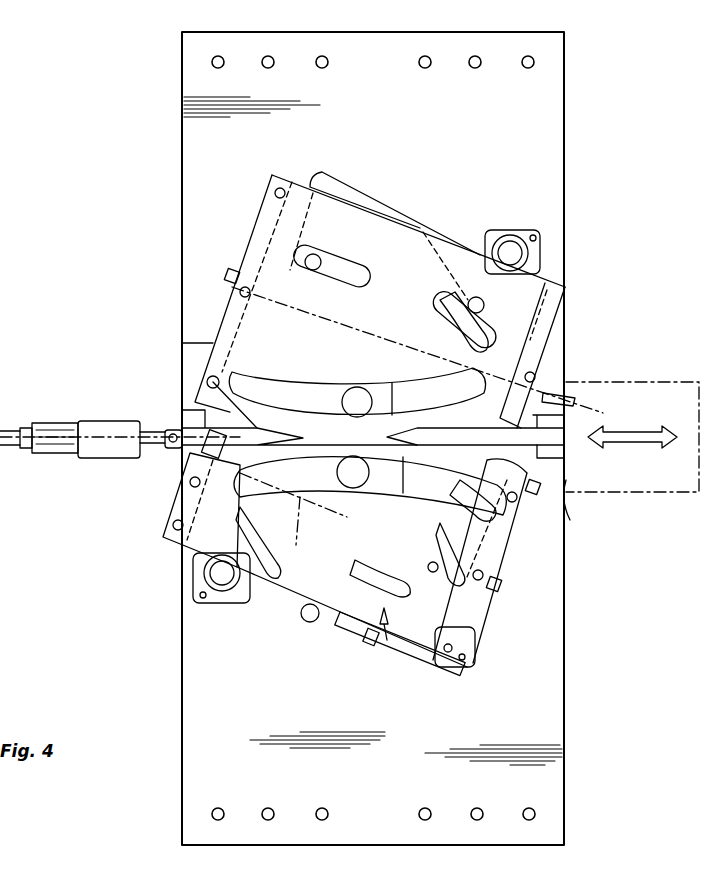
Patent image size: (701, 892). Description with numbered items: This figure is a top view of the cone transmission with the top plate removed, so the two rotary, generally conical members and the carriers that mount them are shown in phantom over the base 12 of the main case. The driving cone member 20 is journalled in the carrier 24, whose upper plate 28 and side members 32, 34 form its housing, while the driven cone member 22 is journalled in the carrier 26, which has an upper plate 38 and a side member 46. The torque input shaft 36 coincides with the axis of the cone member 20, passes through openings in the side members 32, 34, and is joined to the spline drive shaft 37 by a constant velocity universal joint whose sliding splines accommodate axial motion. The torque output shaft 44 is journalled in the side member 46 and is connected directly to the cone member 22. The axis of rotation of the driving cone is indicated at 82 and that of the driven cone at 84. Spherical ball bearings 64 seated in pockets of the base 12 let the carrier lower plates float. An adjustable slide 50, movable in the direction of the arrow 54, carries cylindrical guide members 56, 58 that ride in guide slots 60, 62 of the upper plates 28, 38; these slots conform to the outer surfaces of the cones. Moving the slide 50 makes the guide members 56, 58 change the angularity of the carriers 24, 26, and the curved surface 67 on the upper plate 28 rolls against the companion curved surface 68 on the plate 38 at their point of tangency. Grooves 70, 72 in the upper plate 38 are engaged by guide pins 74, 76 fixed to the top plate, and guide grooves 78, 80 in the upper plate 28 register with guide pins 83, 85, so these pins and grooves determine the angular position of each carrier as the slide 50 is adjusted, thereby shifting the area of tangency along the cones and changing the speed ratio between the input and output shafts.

The base 12 is at (205, 686).
The cone member 20 is at (335, 615).
The cone member 22 is at (355, 212).
The carrier 24 is at (395, 645).
The carrier 26 is at (566, 258).
The upper plate 28 is at (370, 633).
The side member 32 is at (178, 530).
The side member 34 is at (500, 560).
The torque input shaft 36 is at (185, 458).
The drive shaft 37 is at (165, 422).
The upper plate 38 is at (432, 240).
The torque output shaft 44 is at (572, 400).
The side member 46 is at (568, 336).
The adjustable slide 50 is at (672, 478).
The arrow 54 is at (625, 440).
The cylindrical guide member 56 is at (289, 580).
The cylindrical guide member 58 is at (340, 400).
The guide slot 60 is at (404, 493).
The guide slot 62 is at (390, 383).
The ball bearings 64 is at (567, 224).
The curved surface 67 is at (566, 500).
The curved surface 68 is at (213, 382).
The groove 70 is at (567, 285).
The groove 72 is at (350, 255).
The guide pin 74 is at (476, 300).
The guide pin 76 is at (317, 240).
The guide groove 78 is at (397, 645).
The guide groove 80 is at (305, 582).
The axis of rotation 82 is at (277, 570).
The guide pin 83 is at (478, 650).
The axis of rotation 84 is at (401, 330).
The guide pin 85 is at (228, 600).